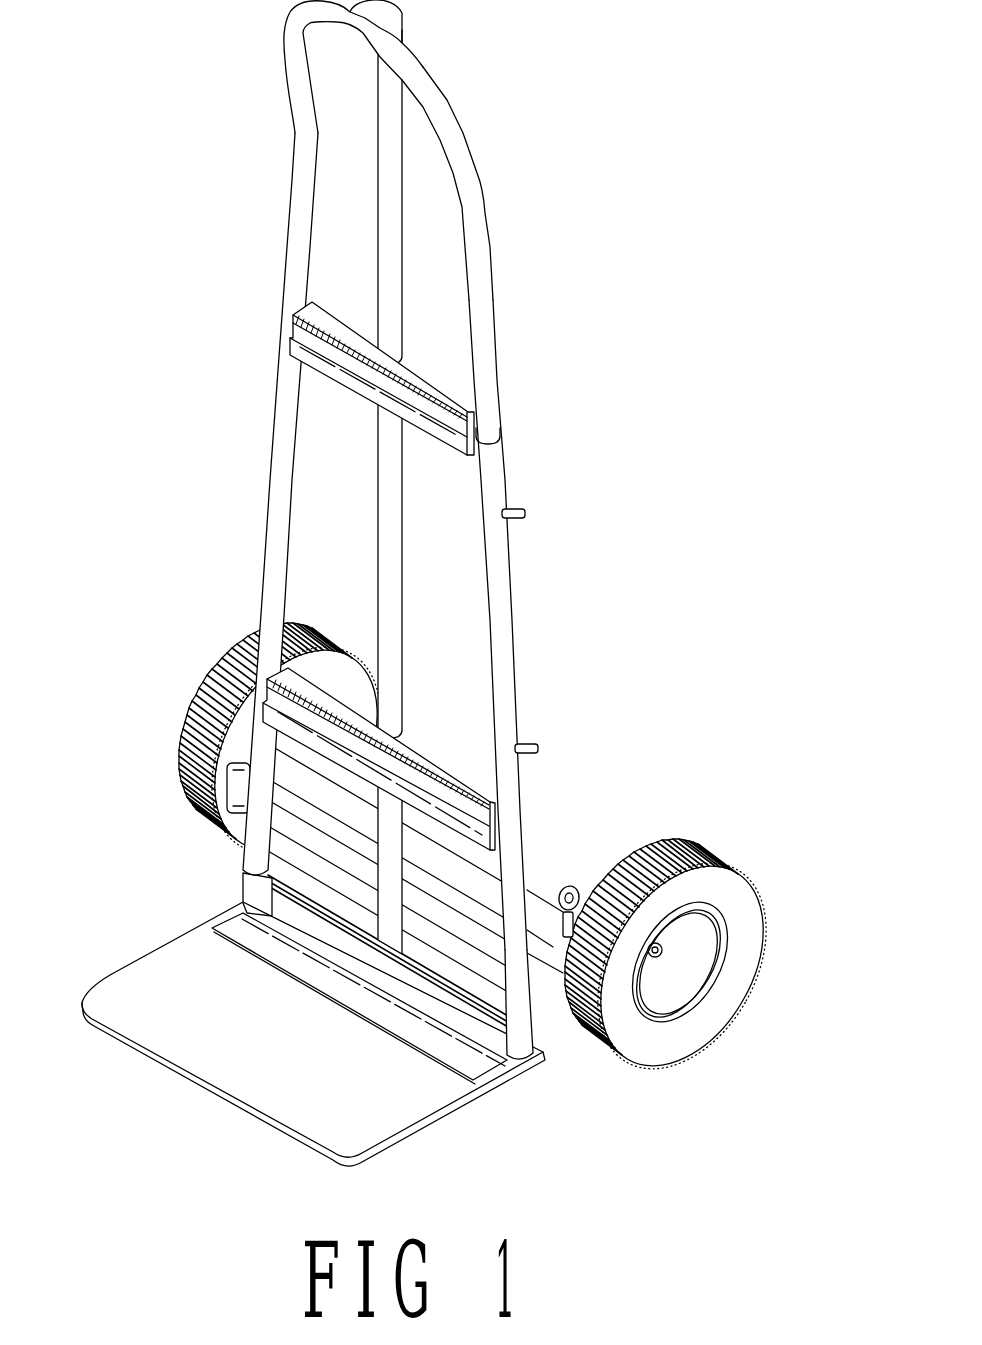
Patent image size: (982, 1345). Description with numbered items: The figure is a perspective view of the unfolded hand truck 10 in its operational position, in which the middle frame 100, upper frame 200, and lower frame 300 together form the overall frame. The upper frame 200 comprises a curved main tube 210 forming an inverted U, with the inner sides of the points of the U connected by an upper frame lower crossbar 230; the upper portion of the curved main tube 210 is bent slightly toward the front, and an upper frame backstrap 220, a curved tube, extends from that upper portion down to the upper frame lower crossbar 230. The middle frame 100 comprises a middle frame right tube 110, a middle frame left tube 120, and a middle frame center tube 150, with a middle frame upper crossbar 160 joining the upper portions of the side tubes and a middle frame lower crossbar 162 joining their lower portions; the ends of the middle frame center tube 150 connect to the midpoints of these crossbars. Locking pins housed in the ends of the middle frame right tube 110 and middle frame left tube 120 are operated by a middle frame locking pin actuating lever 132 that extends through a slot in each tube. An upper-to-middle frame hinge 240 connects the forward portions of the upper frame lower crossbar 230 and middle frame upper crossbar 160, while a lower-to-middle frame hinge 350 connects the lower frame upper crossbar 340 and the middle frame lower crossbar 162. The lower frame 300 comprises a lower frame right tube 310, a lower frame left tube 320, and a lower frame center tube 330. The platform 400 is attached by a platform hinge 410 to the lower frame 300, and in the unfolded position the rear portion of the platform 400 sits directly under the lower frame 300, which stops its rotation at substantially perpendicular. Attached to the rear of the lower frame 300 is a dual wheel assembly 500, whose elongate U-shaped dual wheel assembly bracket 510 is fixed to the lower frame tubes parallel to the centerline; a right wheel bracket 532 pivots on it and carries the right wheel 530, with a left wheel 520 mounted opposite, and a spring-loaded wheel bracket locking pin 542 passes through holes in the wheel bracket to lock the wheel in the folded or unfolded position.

The unfolded hand truck 10 is at (287, 245).
The middle frame 100 is at (401, 575).
The middle frame right tube 110 is at (272, 497).
The middle frame left tube 120 is at (502, 587).
The middle frame locking pin actuating lever 132 is at (525, 513).
The middle frame center tube 150 is at (387, 559).
The middle frame upper crossbar 160 is at (482, 438).
The middle frame lower crossbar 162 is at (520, 812).
The upper frame 200 is at (480, 188).
The curved main tube 210 is at (487, 296).
The upper frame backstrap 220 is at (395, 268).
The upper frame lower crossbar 230 is at (436, 358).
The upper-to-middle frame hinge 240 is at (468, 428).
The lower frame 300 is at (364, 896).
The lower frame right tube 310 is at (257, 863).
The lower frame left tube 320 is at (528, 1028).
The lower frame center tube 330 is at (393, 933).
The lower frame upper crossbar 340 is at (520, 817).
The lower-to-middle frame hinge 350 is at (451, 759).
The platform 400 is at (313, 1034).
The platform hinge 410 is at (235, 935).
The dual wheel assembly 500 is at (696, 956).
The dual wheel assembly bracket 510 is at (310, 843).
The left wheel 520 is at (705, 1017).
The right wheel 530 is at (257, 749).
The right wheel bracket 532 is at (300, 753).
The wheel bracket locking pin 542 is at (587, 890).